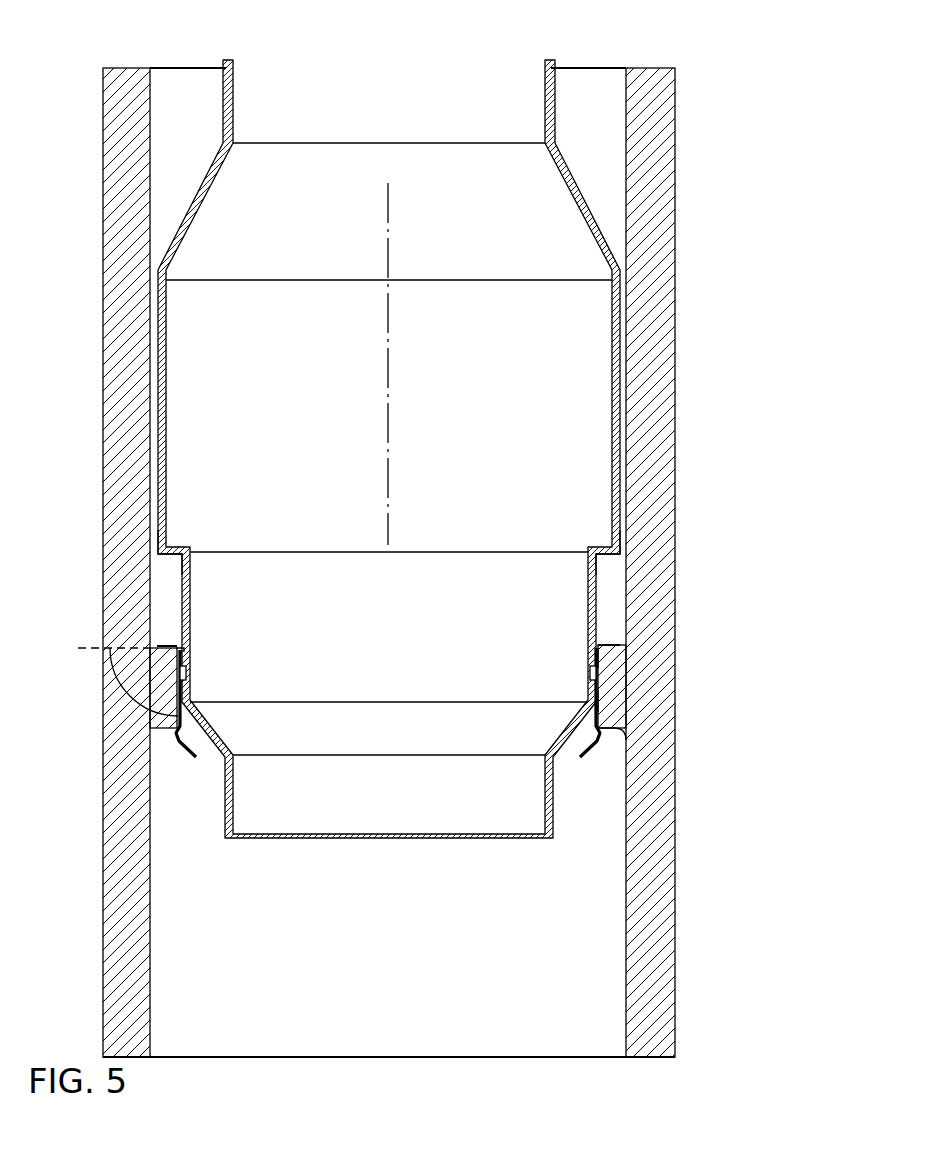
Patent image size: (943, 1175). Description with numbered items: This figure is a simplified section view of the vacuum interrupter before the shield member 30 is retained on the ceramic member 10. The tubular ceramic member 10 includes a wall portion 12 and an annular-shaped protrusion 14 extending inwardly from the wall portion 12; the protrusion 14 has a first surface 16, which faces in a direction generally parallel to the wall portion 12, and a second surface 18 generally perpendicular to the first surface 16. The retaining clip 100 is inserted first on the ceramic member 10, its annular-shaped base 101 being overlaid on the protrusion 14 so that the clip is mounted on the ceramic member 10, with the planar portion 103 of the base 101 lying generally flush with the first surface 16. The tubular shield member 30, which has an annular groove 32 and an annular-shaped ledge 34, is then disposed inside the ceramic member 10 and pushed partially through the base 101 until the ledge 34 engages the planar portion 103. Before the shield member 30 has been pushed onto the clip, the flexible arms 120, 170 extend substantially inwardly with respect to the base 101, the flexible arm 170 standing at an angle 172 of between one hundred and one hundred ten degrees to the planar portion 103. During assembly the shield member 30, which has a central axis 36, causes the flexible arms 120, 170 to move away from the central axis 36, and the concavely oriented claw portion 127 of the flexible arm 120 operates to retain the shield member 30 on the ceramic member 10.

The ceramic member 10 is at (672, 150).
The wall portion 12 is at (660, 205).
The protrusion 14 is at (610, 730).
The first surface 16 is at (607, 663).
The second surface 18 is at (607, 703).
The shield member 30 is at (548, 102).
The annular groove 32 is at (186, 670).
The ledge 34 is at (605, 572).
The central axis 36 is at (388, 250).
The retaining clip 100 is at (178, 745).
The base 101 is at (178, 648).
The planar portion 103 is at (162, 647).
The flexible arm 120 is at (600, 740).
The claw portion 127 is at (605, 747).
The flexible arm 170 is at (174, 735).
The angle 172 is at (122, 690).